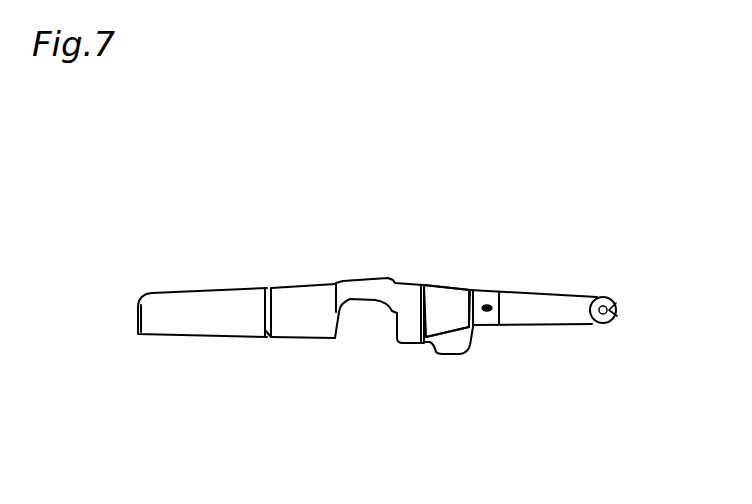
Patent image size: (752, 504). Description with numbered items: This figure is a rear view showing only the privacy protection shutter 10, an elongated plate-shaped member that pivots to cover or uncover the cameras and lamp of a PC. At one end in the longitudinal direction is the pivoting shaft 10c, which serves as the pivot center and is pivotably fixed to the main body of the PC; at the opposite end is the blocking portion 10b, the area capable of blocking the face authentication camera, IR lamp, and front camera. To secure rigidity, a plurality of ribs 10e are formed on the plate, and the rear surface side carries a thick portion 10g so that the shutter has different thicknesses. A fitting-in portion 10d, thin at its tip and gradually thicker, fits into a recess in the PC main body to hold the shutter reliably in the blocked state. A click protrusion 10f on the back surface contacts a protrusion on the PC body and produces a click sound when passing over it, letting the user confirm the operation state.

The privacy protection shutter 10 is at (557, 167).
The blocking portion 10b is at (207, 307).
The pivoting shaft 10c is at (138, 337).
The fitting-in portion 10d is at (453, 355).
The ribs 10e is at (257, 340).
The click protrusion 10f is at (488, 313).
The thick portion 10g is at (445, 308).